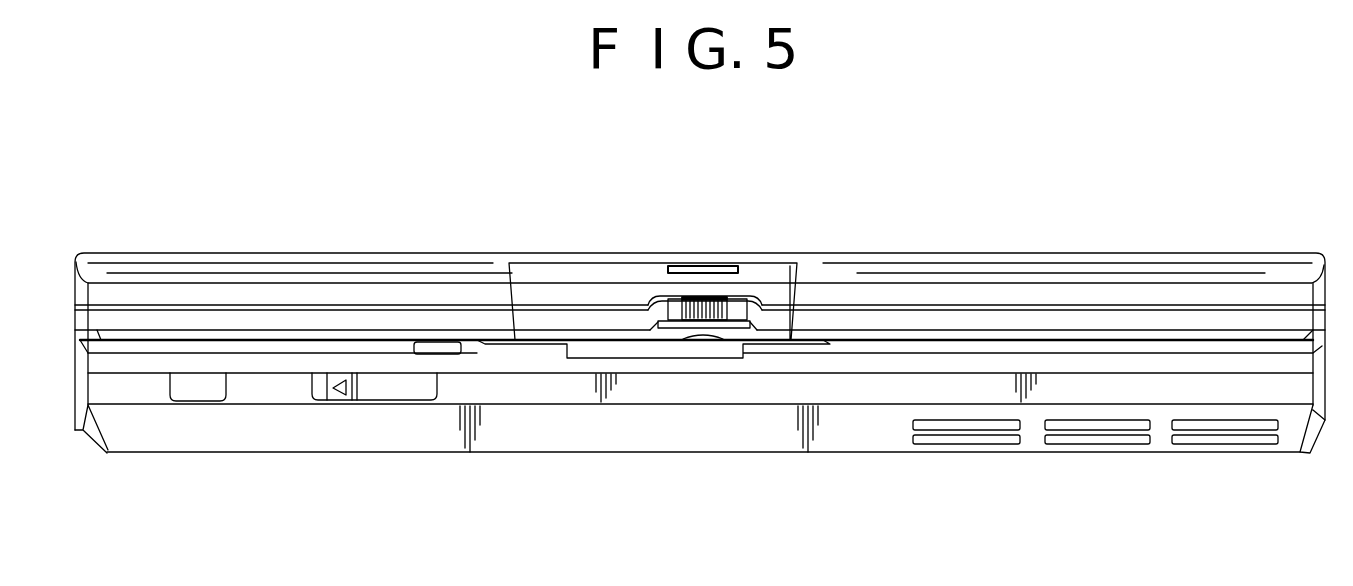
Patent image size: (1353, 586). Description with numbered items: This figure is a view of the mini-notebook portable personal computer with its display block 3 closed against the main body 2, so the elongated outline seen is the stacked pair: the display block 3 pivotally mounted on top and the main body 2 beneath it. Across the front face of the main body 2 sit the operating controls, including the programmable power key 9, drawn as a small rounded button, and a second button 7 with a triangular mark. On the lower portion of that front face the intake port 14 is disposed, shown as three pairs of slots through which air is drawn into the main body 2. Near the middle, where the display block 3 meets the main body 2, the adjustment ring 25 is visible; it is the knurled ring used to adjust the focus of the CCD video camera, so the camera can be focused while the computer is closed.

The main body 2 is at (679, 466).
The display block 3 is at (1132, 243).
The operation button 7 is at (385, 392).
The programmable power key 9 is at (198, 393).
The intake port 14 is at (1100, 445).
The adjustment ring 25 is at (708, 297).